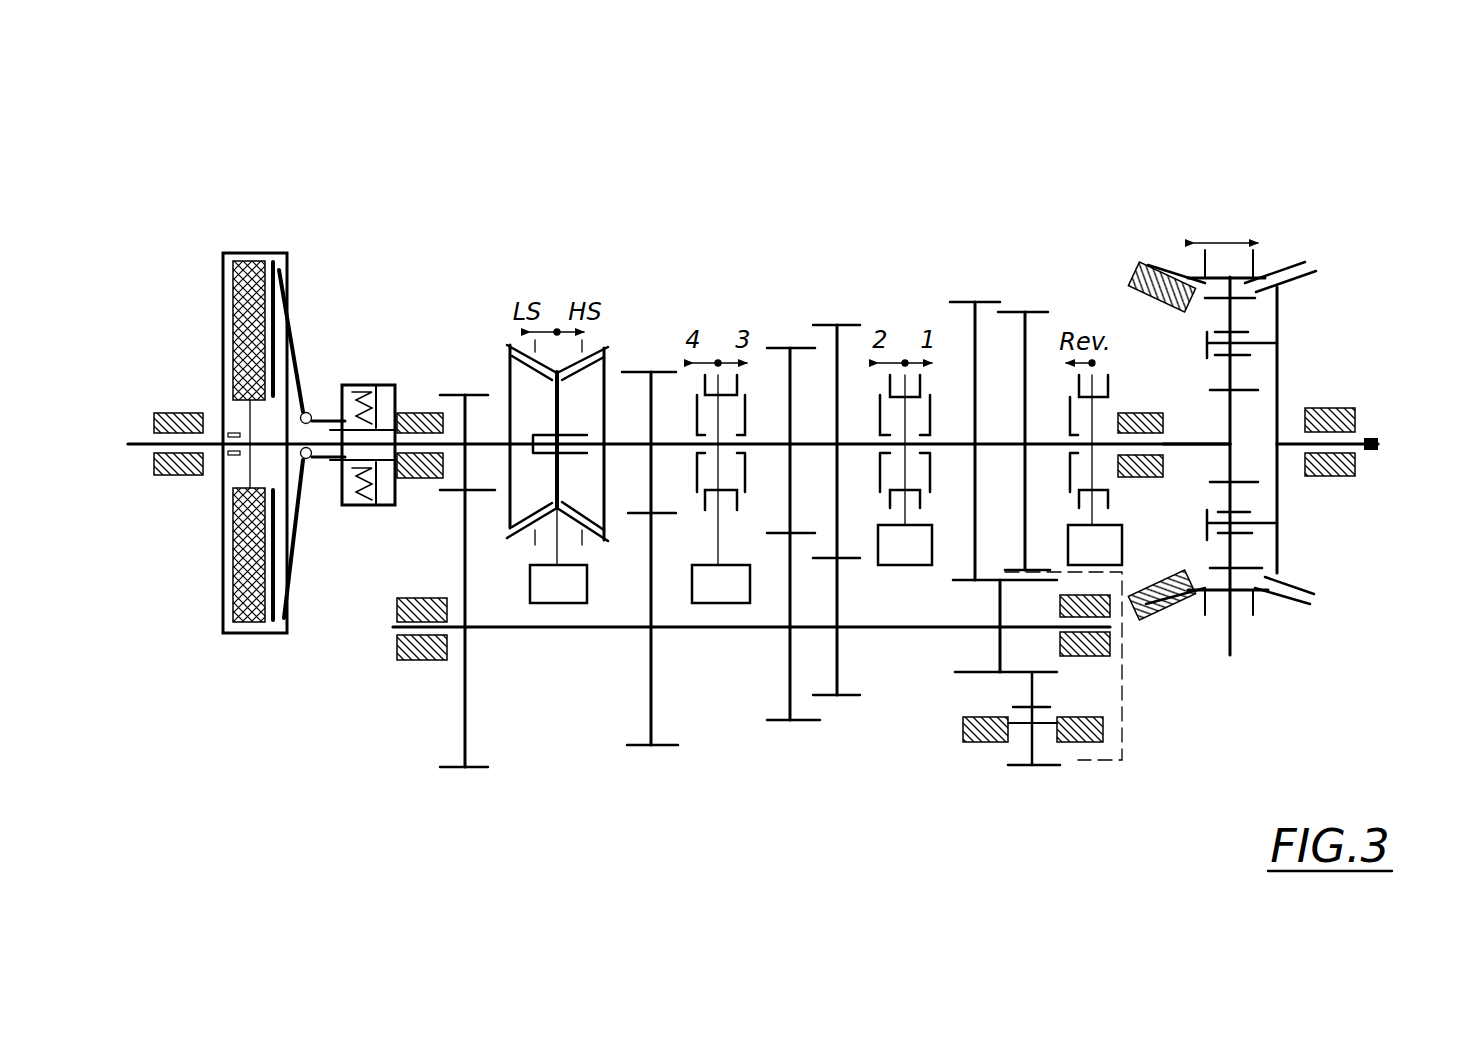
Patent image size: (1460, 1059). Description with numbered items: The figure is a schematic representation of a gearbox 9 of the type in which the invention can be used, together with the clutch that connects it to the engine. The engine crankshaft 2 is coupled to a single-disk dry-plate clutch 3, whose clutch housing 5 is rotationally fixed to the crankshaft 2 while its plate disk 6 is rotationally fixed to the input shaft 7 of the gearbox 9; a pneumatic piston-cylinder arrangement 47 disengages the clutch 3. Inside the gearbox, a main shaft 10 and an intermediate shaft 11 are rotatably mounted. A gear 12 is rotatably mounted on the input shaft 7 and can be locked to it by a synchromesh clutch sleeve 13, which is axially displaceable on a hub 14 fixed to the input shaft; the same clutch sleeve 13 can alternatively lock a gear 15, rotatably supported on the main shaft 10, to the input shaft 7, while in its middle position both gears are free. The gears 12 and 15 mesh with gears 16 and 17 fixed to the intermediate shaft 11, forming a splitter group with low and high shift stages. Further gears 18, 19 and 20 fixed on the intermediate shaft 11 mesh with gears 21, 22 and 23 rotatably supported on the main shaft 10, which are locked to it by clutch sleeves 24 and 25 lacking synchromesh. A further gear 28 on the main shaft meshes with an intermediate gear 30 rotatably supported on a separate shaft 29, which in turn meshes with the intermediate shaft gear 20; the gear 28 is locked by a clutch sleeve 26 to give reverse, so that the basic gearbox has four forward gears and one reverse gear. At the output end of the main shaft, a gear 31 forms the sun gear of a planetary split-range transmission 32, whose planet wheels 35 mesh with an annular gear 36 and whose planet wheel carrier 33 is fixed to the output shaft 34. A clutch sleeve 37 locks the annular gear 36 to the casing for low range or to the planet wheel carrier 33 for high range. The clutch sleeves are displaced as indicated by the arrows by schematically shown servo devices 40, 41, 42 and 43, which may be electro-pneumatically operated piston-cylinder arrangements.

The crankshaft 2 is at (130, 442).
The single-disk dry-plate clutch 3 is at (254, 233).
The clutch housing 5 is at (225, 290).
The plate disk 6 is at (232, 318).
The input shaft 7 is at (282, 425).
The gearbox 9 is at (990, 103).
The main shaft 10 is at (1197, 438).
The intermediate shaft 11 is at (515, 630).
The gear 12 is at (452, 395).
The clutch sleeve 13 is at (651, 372).
The hub 14 is at (555, 372).
The gear 15 is at (607, 350).
The gear 16 is at (463, 767).
The gear 17 is at (650, 745).
The gear 18 is at (770, 720).
The gear 19 is at (838, 697).
The gear 20 is at (965, 674).
The gear 21 is at (790, 348).
The gear 22 is at (838, 325).
The gear 23 is at (975, 302).
The clutch sleeve 24 is at (748, 378).
The clutch sleeve 25 is at (935, 375).
The clutch sleeve 26 is at (1070, 390).
The gear 28 is at (1023, 313).
The separate shaft 29 is at (980, 718).
The intermediate gear 30 is at (1030, 765).
The gear 31 is at (1248, 490).
The split-range transmission 32 is at (1297, 235).
The planet wheel carrier 33 is at (1278, 333).
The shaft 34 is at (1358, 432).
The planet wheels 35 is at (1277, 398).
The annular gear 36 is at (1253, 568).
The clutch sleeve 37 is at (1253, 262).
The servo device 40 is at (558, 555).
The servo device 41 is at (721, 584).
The servo device 42 is at (905, 545).
The servo device 43 is at (1095, 545).
The pneumatic piston-cylinder arrangement 47 is at (355, 500).